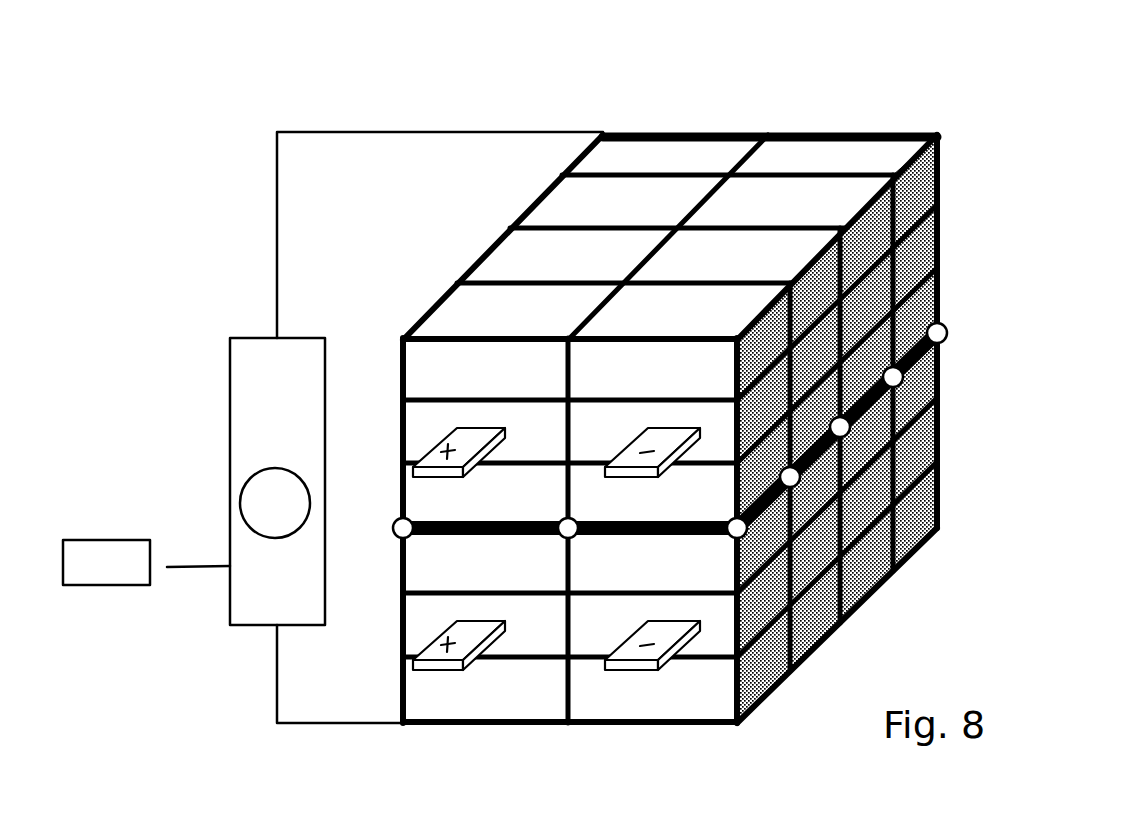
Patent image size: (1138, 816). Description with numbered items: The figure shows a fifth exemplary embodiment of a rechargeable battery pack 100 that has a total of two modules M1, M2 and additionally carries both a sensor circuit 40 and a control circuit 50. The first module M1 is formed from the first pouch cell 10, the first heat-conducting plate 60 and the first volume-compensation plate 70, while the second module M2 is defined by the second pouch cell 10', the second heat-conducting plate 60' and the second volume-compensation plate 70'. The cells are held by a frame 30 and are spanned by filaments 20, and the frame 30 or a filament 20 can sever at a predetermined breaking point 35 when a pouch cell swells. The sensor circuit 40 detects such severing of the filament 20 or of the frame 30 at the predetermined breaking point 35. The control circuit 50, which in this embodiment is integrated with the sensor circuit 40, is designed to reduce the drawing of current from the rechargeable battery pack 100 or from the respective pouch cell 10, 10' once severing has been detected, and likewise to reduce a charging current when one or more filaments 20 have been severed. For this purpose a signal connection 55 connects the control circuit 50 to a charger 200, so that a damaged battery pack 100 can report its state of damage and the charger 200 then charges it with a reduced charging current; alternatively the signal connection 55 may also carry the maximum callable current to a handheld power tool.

The rechargeable battery pack 100 is at (1008, 62).
The first pouch cell 10 is at (953, 258).
The second pouch cell 10' is at (953, 452).
The filament 20 is at (400, 430).
The frame 30 is at (442, 285).
The predetermined breaking point 35 is at (950, 331).
The sensor circuit 40 is at (210, 426).
The control circuit 50 is at (217, 489).
The signal connection 55 is at (181, 576).
The first heat-conducting plate 60 is at (945, 192).
The second heat-conducting plate 60' is at (951, 387).
The first volume-compensation plate 70 is at (953, 316).
The second volume-compensation plate 70' is at (951, 516).
The charger 200 is at (102, 567).
The first module M1 is at (1043, 125).
The second module M2 is at (1055, 318).